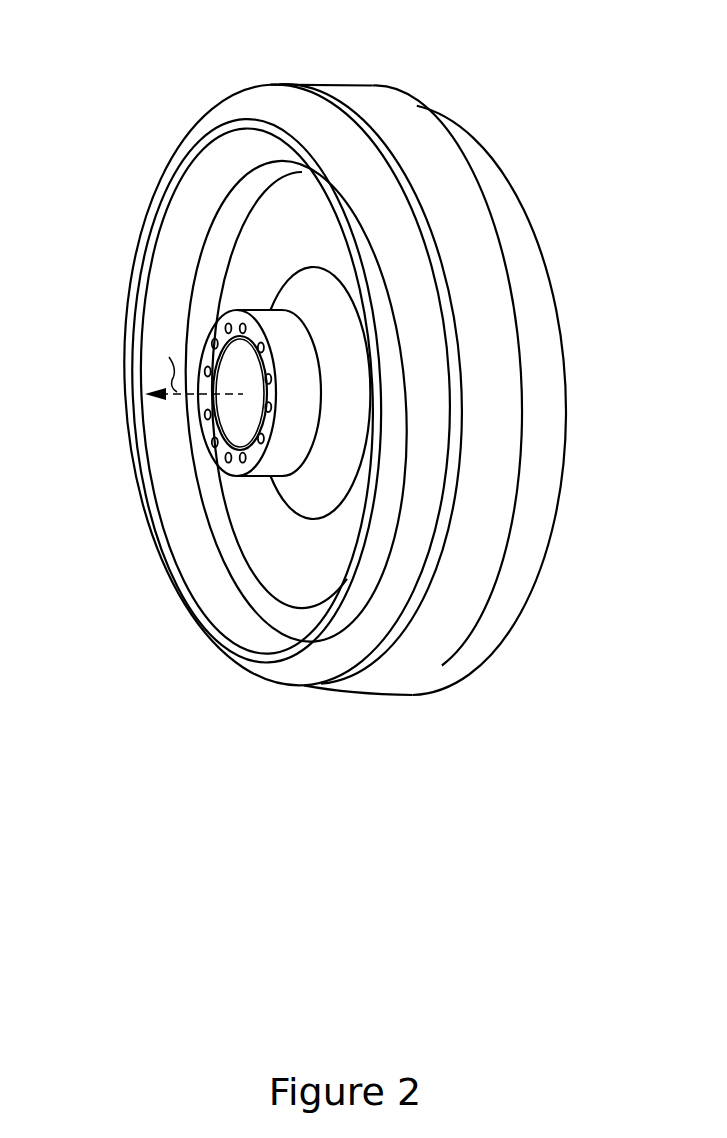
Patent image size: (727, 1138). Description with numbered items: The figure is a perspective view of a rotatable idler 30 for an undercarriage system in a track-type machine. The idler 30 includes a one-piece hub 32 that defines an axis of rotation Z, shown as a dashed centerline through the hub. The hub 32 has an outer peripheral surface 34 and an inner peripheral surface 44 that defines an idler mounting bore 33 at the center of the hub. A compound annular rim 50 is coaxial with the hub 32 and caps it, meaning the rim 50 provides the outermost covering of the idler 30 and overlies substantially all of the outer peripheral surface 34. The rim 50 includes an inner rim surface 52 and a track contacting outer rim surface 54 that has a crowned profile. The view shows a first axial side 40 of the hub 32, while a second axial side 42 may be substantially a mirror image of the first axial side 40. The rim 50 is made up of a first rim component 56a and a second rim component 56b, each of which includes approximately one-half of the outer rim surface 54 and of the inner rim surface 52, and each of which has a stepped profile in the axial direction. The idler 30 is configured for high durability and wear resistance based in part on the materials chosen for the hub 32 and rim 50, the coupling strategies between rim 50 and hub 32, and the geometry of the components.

The rotatable idler 30 is at (74, 180).
The one-piece hub 32 is at (300, 496).
The idler mounting bore 33 is at (240, 404).
The outer peripheral surface 34 is at (198, 143).
The first axial side 40 is at (111, 408).
The second axial side 42 is at (577, 408).
The inner peripheral surface 44 is at (240, 334).
The compound annular rim 50 is at (438, 123).
The inner rim surface 52 is at (216, 145).
The track contacting outer rim surface 54 is at (308, 82).
The first rim component 56a is at (362, 148).
The second rim component 56b is at (484, 154).